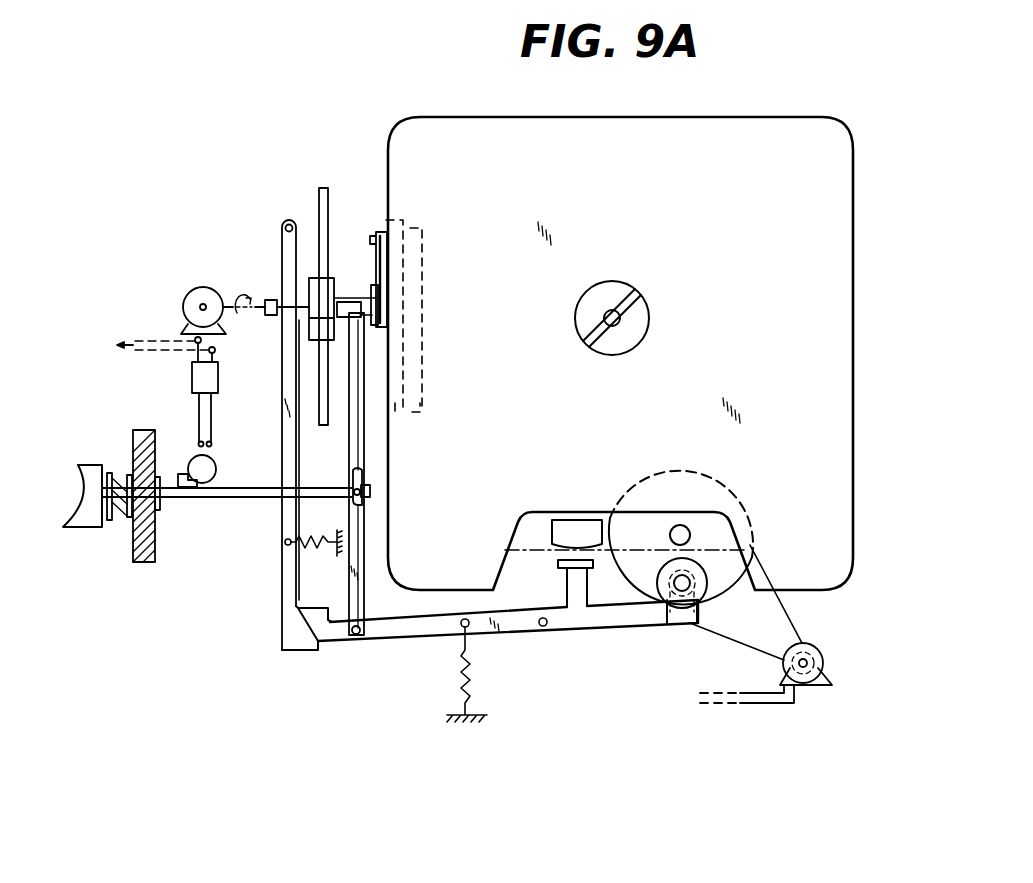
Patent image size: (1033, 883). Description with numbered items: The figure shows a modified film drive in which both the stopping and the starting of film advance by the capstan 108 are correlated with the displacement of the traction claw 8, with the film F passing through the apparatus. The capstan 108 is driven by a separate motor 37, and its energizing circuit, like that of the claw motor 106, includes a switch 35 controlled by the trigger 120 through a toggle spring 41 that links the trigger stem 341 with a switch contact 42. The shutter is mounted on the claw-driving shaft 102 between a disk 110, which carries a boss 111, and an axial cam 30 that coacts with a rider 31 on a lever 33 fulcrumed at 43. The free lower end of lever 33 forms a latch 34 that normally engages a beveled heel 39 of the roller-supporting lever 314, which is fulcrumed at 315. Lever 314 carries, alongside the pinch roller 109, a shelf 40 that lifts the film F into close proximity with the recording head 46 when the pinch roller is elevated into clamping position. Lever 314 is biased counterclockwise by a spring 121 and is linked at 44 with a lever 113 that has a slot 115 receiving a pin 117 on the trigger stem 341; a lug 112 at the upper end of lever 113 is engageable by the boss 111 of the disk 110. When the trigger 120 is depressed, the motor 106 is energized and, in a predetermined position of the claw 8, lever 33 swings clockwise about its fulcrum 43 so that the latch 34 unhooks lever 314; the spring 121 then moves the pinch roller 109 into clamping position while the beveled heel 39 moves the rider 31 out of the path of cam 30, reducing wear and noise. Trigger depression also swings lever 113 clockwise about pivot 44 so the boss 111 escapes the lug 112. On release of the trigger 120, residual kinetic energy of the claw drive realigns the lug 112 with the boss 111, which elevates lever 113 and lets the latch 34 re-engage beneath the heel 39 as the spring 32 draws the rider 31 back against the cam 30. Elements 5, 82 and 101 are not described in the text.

The photoconductive element 5 is at (413, 228).
The traction claw 8 is at (379, 236).
The axial cam 30 is at (308, 328).
The rider 31 is at (308, 300).
The spring 32 is at (318, 536).
The lever 33 is at (282, 452).
The latch 34 is at (310, 650).
The switch 35 is at (192, 377).
The motor 37 is at (816, 652).
The heel 39 is at (300, 611).
The shelf 40 is at (576, 567).
The toggle spring 41 is at (196, 460).
The switch contact 42 is at (212, 412).
The fulcrum 43 is at (288, 224).
The point of articulation 44 is at (356, 634).
The recording head 46 is at (572, 528).
The gear 82 is at (147, 540).
The cartridge housing 101 is at (763, 225).
The claw-driving shaft 102 is at (277, 303).
The claw motor 106 is at (198, 293).
The capstan 108 is at (692, 518).
The pinch roller 109 is at (692, 584).
The disk 110 is at (333, 280).
The boss 111 is at (343, 318).
The lug 112 is at (350, 302).
The lever 113 is at (360, 417).
The slot 115 is at (362, 477).
The pin 117 is at (370, 495).
The trigger 120 is at (88, 470).
The spring 121 is at (466, 670).
The roller-supporting lever 314 is at (612, 626).
The fulcrum 315 is at (540, 627).
The trigger stem 341 is at (234, 494).
The film F is at (520, 550).